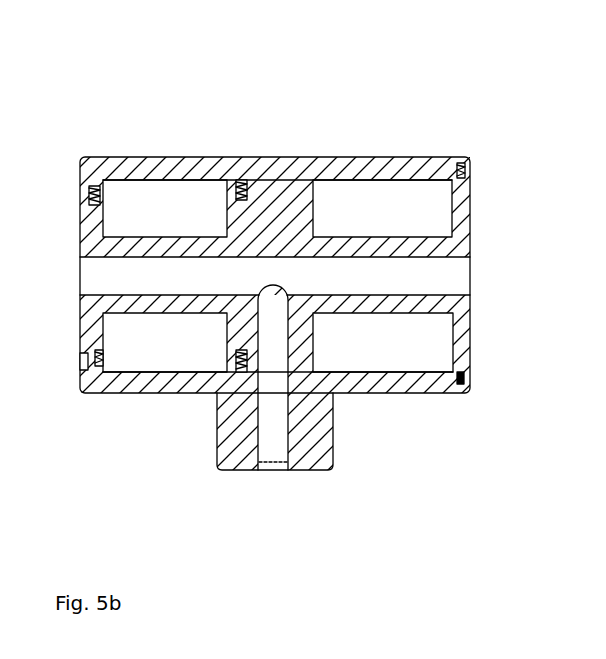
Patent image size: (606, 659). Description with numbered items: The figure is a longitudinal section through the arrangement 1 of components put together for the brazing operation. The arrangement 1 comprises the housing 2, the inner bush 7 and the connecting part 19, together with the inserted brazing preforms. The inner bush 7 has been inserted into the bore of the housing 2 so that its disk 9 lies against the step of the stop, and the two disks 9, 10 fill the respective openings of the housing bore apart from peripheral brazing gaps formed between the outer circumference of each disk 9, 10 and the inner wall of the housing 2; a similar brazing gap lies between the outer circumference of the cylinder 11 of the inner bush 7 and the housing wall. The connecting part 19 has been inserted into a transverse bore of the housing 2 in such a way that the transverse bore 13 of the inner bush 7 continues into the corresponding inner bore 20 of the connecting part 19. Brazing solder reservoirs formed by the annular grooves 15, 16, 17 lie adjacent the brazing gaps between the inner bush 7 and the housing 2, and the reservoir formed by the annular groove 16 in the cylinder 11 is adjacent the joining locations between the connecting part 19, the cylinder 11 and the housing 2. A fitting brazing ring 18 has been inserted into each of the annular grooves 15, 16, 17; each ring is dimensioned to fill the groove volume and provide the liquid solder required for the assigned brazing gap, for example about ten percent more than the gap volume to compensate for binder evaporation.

The arrangement 1 is at (404, 80).
The housing 2 is at (148, 383).
The inner bush 7 is at (386, 358).
The disk 9 is at (80, 330).
The disk 10 is at (470, 340).
The cylinder 11 is at (293, 190).
The transverse bore 13 is at (273, 357).
The annular groove 15 is at (100, 186).
The annular groove 16 is at (240, 180).
The annular groove 17 is at (460, 158).
The brazing ring 18 is at (242, 180).
The connecting part 19 is at (230, 436).
The inner bore 20 is at (277, 450).